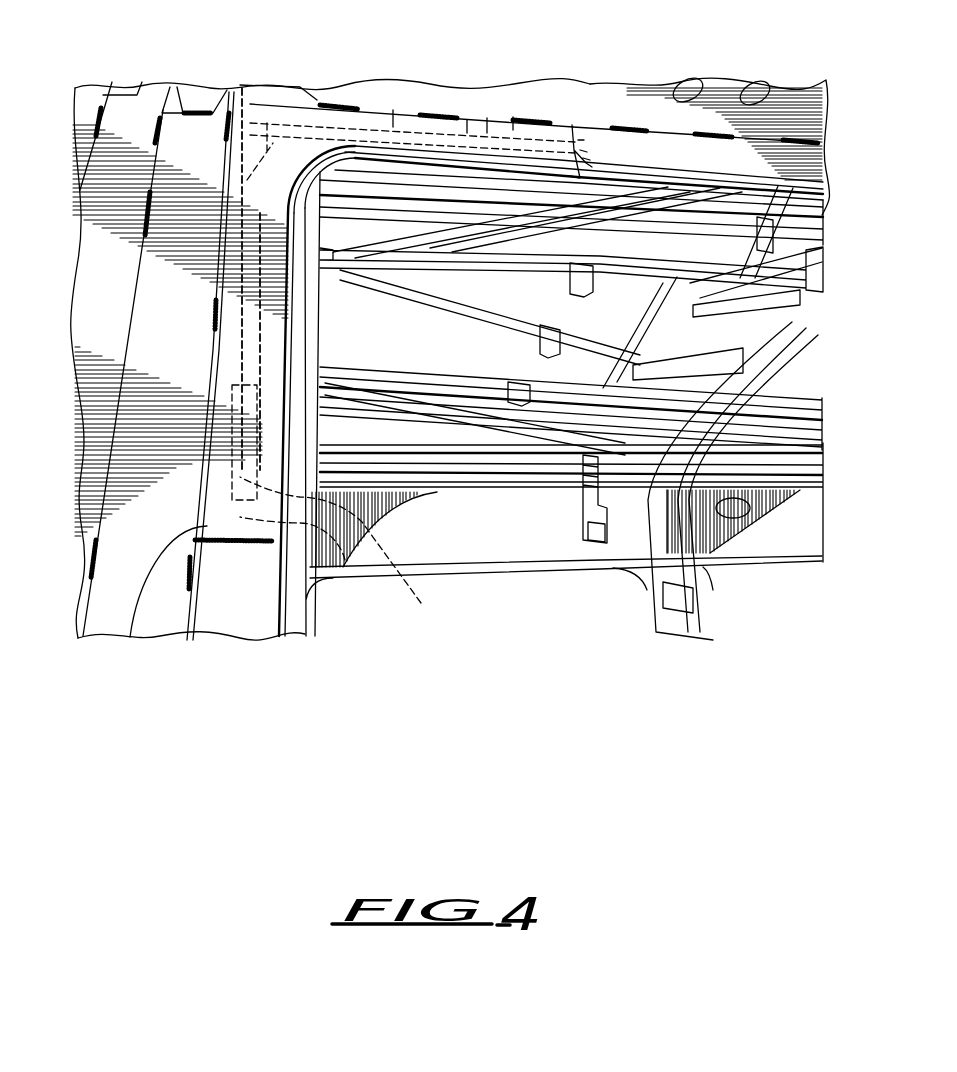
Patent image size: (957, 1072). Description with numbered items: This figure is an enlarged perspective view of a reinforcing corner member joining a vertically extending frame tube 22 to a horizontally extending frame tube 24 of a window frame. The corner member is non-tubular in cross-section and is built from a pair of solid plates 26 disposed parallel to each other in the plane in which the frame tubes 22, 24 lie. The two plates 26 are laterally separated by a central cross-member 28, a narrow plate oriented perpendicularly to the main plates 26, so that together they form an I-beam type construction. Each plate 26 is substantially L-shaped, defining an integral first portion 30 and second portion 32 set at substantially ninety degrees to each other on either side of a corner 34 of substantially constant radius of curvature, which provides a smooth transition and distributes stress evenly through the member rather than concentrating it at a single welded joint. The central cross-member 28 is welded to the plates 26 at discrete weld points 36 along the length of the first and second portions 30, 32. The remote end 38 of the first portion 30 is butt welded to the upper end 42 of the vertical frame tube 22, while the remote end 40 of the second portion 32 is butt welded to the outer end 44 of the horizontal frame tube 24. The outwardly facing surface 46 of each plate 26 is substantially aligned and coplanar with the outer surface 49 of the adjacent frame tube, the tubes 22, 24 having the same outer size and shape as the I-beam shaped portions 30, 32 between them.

The vertically extending frame tube 22 is at (263, 616).
The horizontally extending frame tube 24 is at (705, 143).
The solid plate 26 is at (314, 128).
The central cross-member 28 is at (479, 100).
The first portion 30 is at (270, 325).
The second portion 32 is at (422, 142).
The corner 34 is at (310, 156).
The weld points 36 is at (240, 86).
The remote end of the first portion 38 is at (130, 638).
The remote end of the second portion 40 is at (573, 147).
The upper end of the vertically extending frame tube 42 is at (190, 637).
The outer end of the horizontally extending frame tube 44 is at (606, 145).
The outwardly facing surface 46 is at (266, 380).
The outer surface of the frame tube 49 is at (232, 590).